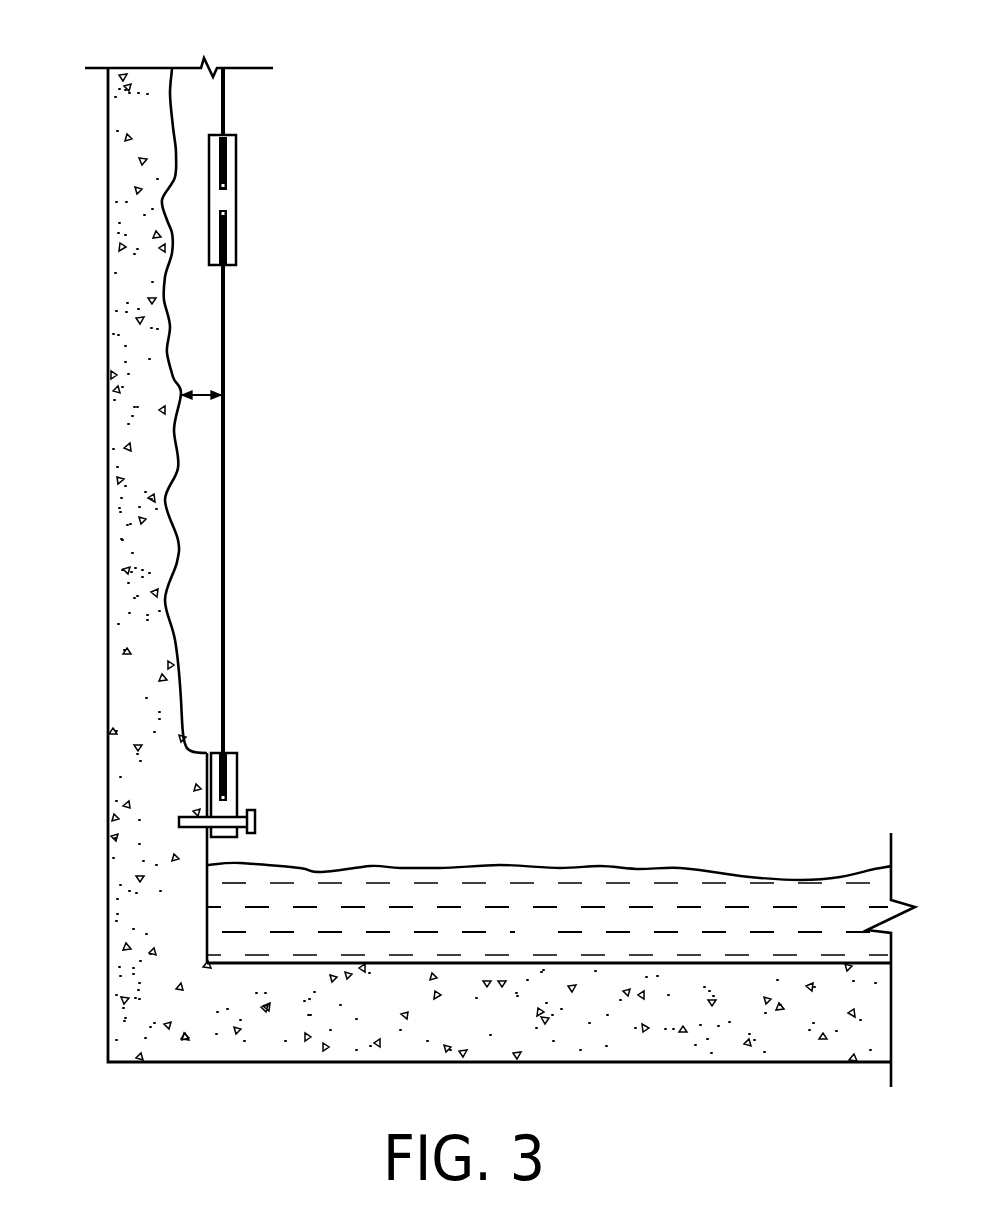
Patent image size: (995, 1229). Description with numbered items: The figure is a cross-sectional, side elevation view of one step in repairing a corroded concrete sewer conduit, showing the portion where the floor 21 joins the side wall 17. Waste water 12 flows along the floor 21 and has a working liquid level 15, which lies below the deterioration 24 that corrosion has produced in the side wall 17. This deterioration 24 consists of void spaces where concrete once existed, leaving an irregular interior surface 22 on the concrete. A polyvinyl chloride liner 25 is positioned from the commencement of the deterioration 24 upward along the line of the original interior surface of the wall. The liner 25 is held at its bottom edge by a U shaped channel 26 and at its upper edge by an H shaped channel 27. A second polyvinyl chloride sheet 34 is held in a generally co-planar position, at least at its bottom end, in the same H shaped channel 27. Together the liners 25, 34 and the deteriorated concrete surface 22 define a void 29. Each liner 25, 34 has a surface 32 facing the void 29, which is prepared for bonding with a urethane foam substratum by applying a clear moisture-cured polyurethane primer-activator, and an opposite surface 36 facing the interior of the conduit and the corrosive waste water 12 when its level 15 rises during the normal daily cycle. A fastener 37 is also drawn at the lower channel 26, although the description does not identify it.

The waste water 12 is at (552, 946).
The liquid level 15 is at (568, 867).
The side wall 17 is at (107, 680).
The floor 21 is at (630, 1062).
The interior surface 22 is at (173, 90).
The deterioration 24 is at (200, 393).
The polyvinyl chloride liner 25 is at (248, 443).
The U shaped channel 26 is at (238, 800).
The H shaped channel 27 is at (237, 227).
The void 29 is at (210, 350).
The surface facing the void 32 is at (222, 83).
The second polyvinyl chloride sheet 34 is at (225, 97).
The surface facing the interior of the conduit 36 is at (227, 115).
The anchor bolt 37 is at (256, 822).